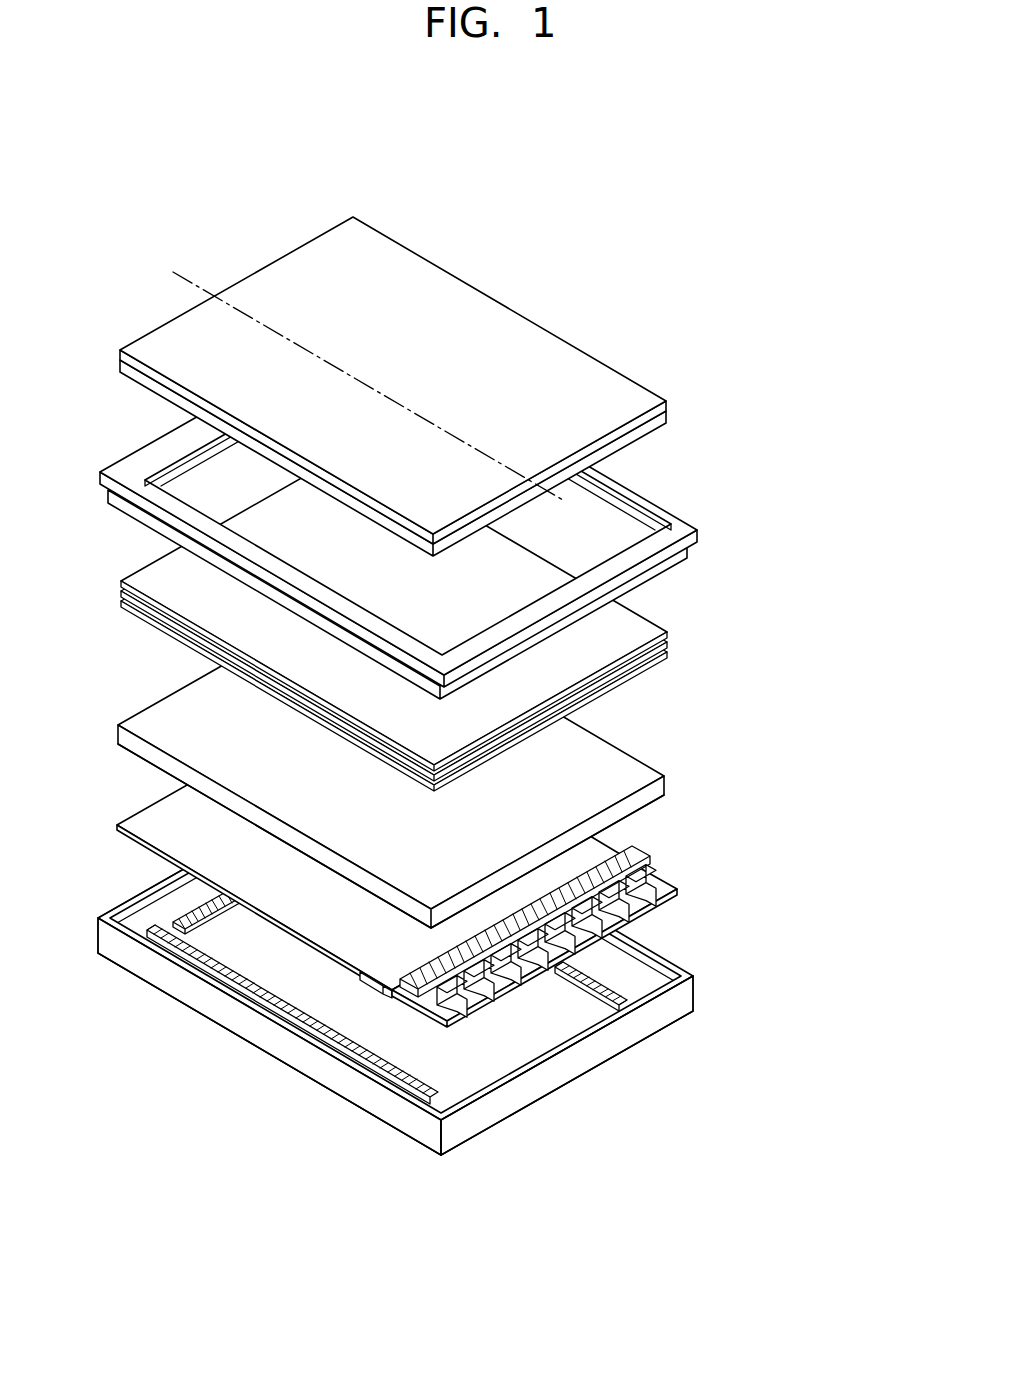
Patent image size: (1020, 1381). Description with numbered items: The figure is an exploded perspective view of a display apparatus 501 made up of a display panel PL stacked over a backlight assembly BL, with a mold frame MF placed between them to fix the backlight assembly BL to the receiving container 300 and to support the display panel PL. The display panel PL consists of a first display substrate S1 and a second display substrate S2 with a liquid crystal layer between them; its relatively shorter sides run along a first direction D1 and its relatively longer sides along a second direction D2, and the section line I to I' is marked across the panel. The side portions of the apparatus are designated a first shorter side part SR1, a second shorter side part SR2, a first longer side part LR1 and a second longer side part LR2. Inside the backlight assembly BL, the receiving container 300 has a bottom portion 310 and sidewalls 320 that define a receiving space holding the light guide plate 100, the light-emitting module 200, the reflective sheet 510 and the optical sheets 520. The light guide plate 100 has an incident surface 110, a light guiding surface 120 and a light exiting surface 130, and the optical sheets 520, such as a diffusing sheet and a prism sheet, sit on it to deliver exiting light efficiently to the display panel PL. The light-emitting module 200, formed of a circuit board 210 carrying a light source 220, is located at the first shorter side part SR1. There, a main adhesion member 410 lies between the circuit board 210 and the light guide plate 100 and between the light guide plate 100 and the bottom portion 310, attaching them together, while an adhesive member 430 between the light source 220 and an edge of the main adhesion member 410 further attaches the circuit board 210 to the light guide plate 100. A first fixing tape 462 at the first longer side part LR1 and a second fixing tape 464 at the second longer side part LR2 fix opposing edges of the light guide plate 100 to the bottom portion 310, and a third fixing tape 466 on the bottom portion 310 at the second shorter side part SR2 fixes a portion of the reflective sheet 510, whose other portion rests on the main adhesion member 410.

The display apparatus 501 is at (527, 281).
The display panel PL is at (448, 386).
The first display substrate S1 is at (668, 414).
The second display substrate S2 is at (668, 402).
The mold frame MF is at (700, 520).
The backlight assembly BL is at (443, 801).
The optical sheets 520 is at (444, 619).
The light guide plate 100 is at (455, 760).
The light exiting surface 130 is at (625, 774).
The incident surface 110 is at (655, 794).
The light guiding surface 120 is at (741, 745).
The light-emitting module 200 is at (592, 936).
The circuit board 210 is at (664, 900).
The light source 220 is at (668, 880).
The receiving container 300 is at (424, 964).
The bottom portion 310 is at (602, 1046).
The sidewalls 320 is at (612, 1078).
The main adhesion member 410 is at (386, 992).
The adhesive member 430 is at (412, 1003).
The first fixing tape 462 is at (205, 962).
The second fixing tape 464 is at (590, 992).
The third fixing tape 466 is at (168, 928).
The reflective sheet 510 is at (330, 928).
The first longer side part LR1 is at (224, 1098).
The second longer side part LR2 is at (702, 970).
The first shorter side part SR1 is at (614, 1098).
The second shorter side part SR2 is at (125, 887).
The section line I is at (348, 386).
The section line I' is at (545, 522).
The first direction D1 is at (600, 1272).
The second direction D2 is at (600, 1272).